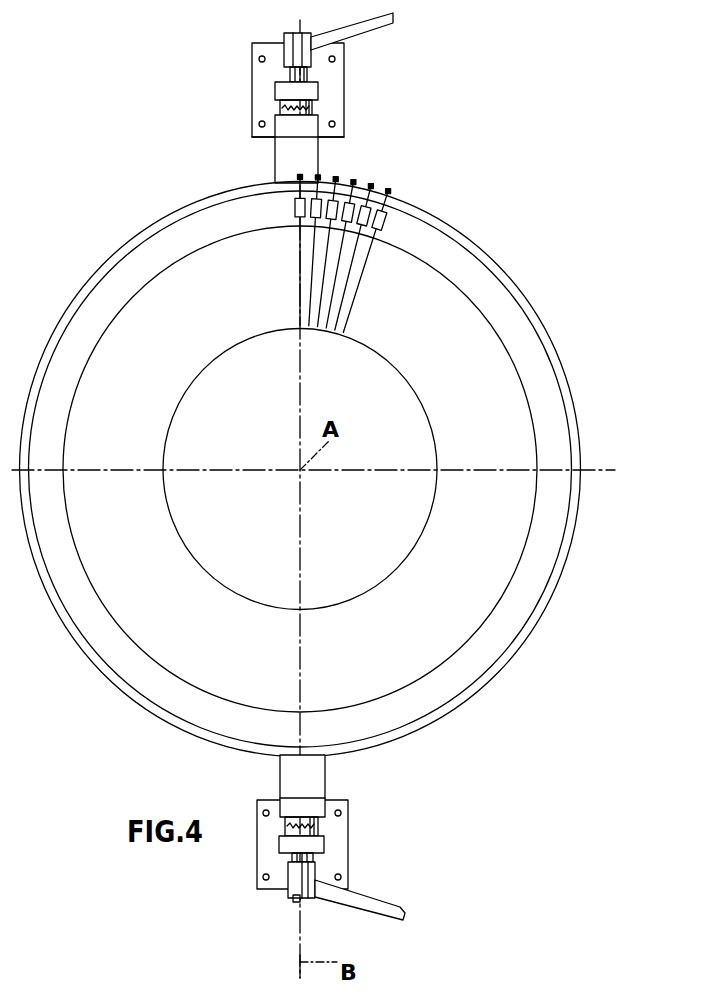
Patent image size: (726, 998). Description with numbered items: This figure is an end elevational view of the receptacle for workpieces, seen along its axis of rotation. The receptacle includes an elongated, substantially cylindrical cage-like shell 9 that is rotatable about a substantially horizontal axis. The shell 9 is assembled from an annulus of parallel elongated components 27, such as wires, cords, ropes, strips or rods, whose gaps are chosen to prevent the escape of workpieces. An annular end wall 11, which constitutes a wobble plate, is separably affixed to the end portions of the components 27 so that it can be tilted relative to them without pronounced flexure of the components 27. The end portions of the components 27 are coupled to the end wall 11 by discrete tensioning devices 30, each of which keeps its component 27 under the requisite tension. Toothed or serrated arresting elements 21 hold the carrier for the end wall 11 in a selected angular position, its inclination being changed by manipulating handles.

The shell 9 is at (574, 370).
The end wall 11 is at (480, 542).
The arresting element 21 is at (313, 843).
The elongated component 27 is at (358, 290).
The tensioning device 30 is at (396, 228).